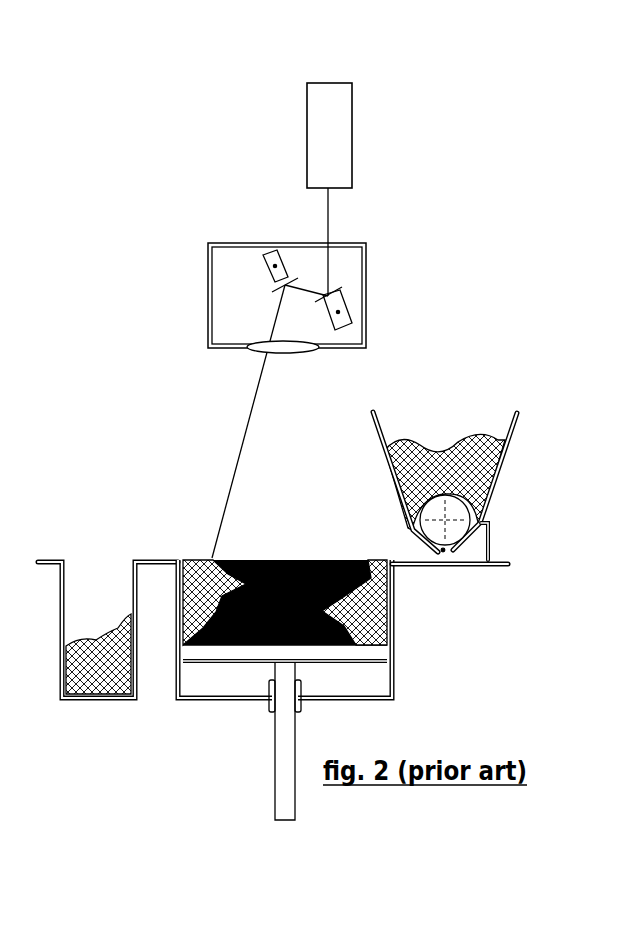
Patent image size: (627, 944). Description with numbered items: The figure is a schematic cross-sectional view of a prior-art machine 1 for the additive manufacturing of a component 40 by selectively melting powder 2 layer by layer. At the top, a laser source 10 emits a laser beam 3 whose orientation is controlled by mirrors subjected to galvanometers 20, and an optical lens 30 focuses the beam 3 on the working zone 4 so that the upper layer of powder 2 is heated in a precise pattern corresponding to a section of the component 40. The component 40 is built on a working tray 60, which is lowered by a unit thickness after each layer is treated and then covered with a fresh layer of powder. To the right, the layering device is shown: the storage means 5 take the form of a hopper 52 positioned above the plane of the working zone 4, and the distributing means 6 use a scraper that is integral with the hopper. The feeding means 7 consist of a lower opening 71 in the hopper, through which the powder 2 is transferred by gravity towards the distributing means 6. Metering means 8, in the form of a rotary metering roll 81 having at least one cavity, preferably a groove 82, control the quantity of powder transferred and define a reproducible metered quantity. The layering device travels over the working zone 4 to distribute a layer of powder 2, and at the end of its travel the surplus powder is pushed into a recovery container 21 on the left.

The machine 1 is at (124, 349).
The powder 2 is at (285, 564).
The laser beam 3 is at (242, 440).
The working zone 4 is at (286, 530).
The storage means 5 is at (491, 398).
The distributing means 6 is at (494, 521).
The feeding means 7 is at (397, 497).
The metering means 8 is at (404, 524).
The laser source 10 is at (318, 93).
The galvanometers 20 is at (265, 260).
The recovery container 21 is at (112, 601).
The optical lens 30 is at (285, 348).
The component 40 is at (300, 599).
The hopper 52 is at (378, 420).
The working tray 60 is at (318, 650).
The lower opening 71 is at (443, 550).
The rotary metering roll 81 is at (432, 498).
The groove 82 is at (469, 503).